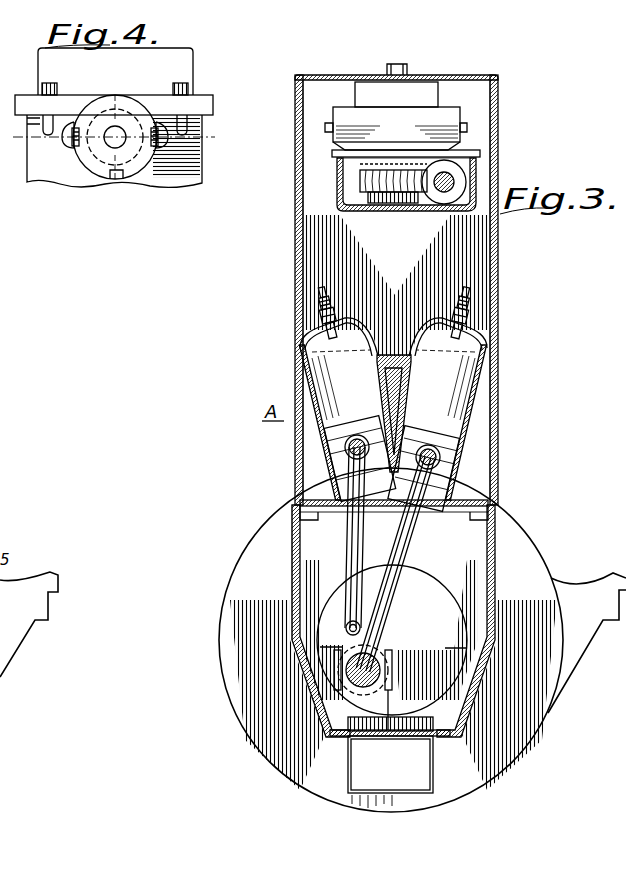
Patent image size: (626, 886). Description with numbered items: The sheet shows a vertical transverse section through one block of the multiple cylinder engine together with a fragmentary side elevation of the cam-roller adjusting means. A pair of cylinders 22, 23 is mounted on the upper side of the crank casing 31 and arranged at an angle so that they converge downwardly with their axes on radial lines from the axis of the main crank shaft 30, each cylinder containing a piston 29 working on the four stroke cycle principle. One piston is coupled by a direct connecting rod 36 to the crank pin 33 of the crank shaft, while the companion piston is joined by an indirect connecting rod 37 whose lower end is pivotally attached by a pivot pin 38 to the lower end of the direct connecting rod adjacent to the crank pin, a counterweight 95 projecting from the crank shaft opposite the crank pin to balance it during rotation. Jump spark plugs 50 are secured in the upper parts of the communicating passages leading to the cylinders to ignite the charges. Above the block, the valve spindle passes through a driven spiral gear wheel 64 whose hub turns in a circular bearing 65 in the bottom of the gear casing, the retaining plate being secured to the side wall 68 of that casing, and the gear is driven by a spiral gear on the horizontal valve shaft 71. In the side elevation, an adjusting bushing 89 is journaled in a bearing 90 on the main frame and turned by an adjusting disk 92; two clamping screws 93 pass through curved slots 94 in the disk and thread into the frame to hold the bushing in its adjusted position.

In FIG. 3, the cylinder 22 is at (437, 494).
In FIG. 3, the cylinder 23 is at (362, 488).
In FIG. 3, the piston 29 is at (338, 432).
In FIG. 3, the main crank shaft 30 is at (388, 670).
In FIG. 3, the crank casing 31 is at (291, 563).
In FIG. 3, the crank pin 33 is at (373, 698).
In FIG. 3, the direct connecting rod 36 is at (387, 588).
In FIG. 3, the indirect connecting rod 37 is at (355, 548).
In FIG. 3, the pivot pin 38 is at (346, 628).
In FIG. 3, the jump spark plug 50 is at (322, 303).
In FIG. 3, the driven spiral gear wheel 64 is at (362, 180).
In FIG. 3, the circular bearing 65 is at (393, 198).
In FIG. 4, the side wall of gear casing 68 is at (114, 151).
In FIG. 3, the side wall of gear casing 68 is at (342, 190).
In FIG. 3, the valve shaft 71 is at (454, 179).
In FIG. 4, the adjusting bushing 89 is at (125, 181).
In FIG. 4, the bearing 90 is at (122, 105).
In FIG. 4, the adjusting disk 92 is at (100, 172).
In FIG. 3, the adjusting disk 92 is at (340, 112).
In FIG. 4, the clamping screw 93 is at (170, 143).
In FIG. 4, the slot 94 is at (77, 127).
In FIG. 3, the counterweight 95 is at (460, 637).